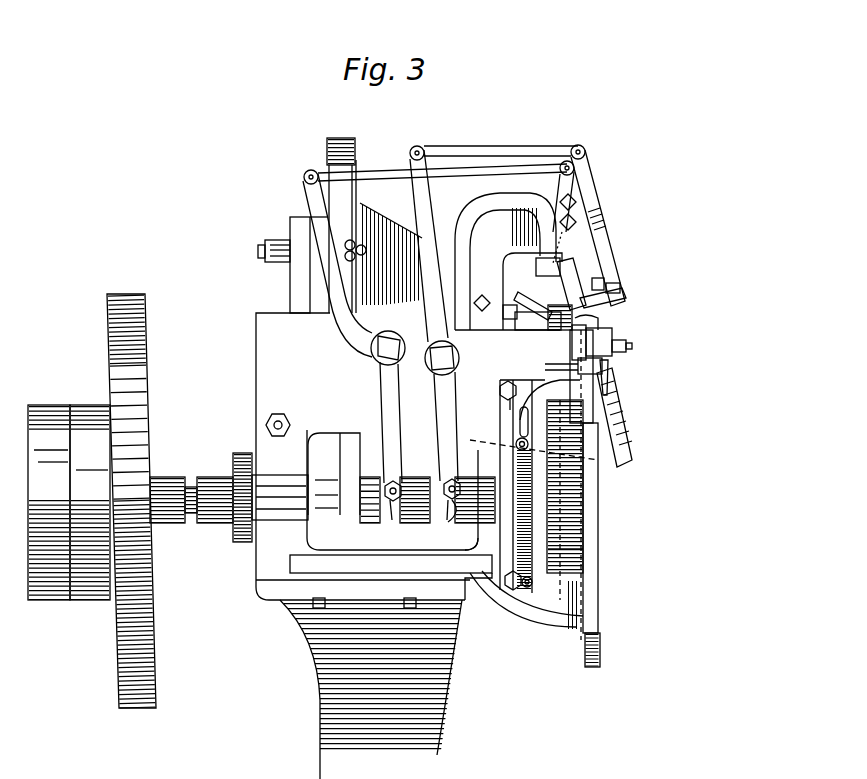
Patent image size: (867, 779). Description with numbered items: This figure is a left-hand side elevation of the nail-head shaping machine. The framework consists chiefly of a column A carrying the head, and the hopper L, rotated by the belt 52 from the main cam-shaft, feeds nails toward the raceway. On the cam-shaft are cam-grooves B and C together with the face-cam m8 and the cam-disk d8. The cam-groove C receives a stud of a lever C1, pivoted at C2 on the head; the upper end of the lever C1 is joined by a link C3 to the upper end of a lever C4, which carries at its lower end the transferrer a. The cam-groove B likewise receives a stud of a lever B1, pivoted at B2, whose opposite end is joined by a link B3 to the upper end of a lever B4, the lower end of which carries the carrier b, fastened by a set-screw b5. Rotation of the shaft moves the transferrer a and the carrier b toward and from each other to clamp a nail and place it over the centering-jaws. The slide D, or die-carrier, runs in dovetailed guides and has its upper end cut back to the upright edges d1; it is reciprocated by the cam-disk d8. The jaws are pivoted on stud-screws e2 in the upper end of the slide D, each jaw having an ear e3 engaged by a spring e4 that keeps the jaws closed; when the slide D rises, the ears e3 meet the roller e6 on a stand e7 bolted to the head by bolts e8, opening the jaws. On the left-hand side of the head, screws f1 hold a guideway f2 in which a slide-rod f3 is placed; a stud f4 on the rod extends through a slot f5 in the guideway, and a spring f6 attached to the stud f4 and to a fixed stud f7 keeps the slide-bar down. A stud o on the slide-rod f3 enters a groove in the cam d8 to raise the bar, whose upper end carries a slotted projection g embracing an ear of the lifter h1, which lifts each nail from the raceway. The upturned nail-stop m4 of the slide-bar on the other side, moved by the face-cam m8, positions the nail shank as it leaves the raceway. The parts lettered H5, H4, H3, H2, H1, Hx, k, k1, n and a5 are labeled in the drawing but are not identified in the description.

The wheel H5 is at (43, 408).
The wheel H4 is at (88, 408).
The wheel H3 is at (118, 294).
The shaft H2 is at (190, 478).
The frame H1 is at (256, 346).
The face-cam m8 is at (238, 530).
The belt 52 is at (350, 454).
The column A is at (330, 669).
The hopper L is at (326, 142).
The link C3 is at (374, 177).
The lever C4 is at (530, 191).
The link B3 is at (462, 150).
The lever B4 is at (590, 193).
The pivot C2 is at (378, 350).
The pivot B2 is at (436, 368).
The lever C1 is at (386, 414).
The lever B1 is at (446, 416).
The cam-groove C is at (396, 522).
The cam-groove B is at (444, 522).
The lifter h1 is at (482, 535).
The nut k is at (502, 303).
The transferrer a is at (550, 304).
The projection g is at (536, 322).
The bolts e8 is at (560, 262).
The stand e7 is at (574, 268).
The roller or projection e6 is at (596, 284).
The set-screw b5 is at (617, 283).
The carrier b is at (627, 295).
The ear e3 is at (590, 313).
The spring k1 is at (606, 326).
The plate n is at (582, 331).
The upright edges d1 is at (612, 345).
The stud-screw e2 is at (632, 353).
The nail-stop m4 is at (612, 366).
The spring e4 is at (606, 380).
The arm a5 is at (610, 445).
The roller or stud o is at (598, 460).
The post Hx is at (588, 618).
The slide D is at (590, 518).
The cam-disk d8 is at (580, 549).
The slide-rod f3 is at (527, 608).
The screws f1 is at (500, 386).
The guideway f2 is at (510, 404).
The slot f5 is at (520, 424).
The stud f4 is at (518, 445).
The spring f6 is at (518, 556).
The stud f7 is at (522, 586).